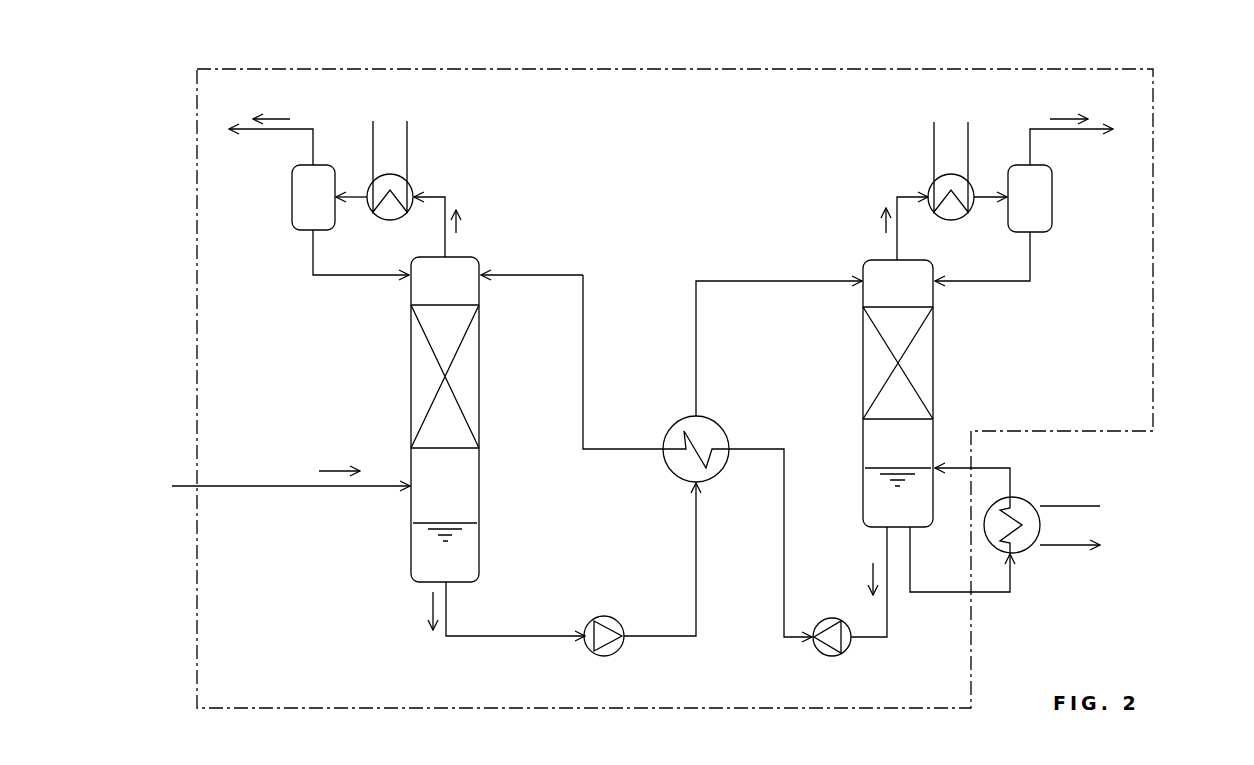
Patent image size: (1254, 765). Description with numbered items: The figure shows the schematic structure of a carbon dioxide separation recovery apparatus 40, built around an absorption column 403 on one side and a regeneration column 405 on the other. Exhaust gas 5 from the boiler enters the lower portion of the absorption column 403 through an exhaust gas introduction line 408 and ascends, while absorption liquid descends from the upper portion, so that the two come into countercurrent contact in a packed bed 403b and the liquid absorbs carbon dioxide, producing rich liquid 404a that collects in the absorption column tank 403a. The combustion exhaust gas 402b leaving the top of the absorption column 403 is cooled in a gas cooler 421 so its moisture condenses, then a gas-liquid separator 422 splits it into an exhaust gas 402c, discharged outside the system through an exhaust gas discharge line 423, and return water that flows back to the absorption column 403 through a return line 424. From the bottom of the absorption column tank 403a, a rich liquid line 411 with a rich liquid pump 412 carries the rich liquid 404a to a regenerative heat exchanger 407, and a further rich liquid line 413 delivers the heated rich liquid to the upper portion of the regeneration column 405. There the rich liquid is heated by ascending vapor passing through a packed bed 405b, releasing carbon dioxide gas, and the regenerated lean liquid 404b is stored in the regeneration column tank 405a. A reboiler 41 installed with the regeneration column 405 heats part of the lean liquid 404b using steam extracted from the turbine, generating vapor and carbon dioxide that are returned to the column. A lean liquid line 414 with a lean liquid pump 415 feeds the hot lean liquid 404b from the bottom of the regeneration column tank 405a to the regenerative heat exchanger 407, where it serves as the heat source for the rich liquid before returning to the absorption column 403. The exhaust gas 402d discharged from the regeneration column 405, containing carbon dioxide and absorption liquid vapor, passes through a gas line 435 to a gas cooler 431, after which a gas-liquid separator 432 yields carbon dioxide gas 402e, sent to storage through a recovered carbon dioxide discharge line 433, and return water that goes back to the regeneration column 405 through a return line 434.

The carbon dioxide separation recovery apparatus 40 is at (630, 69).
The exhaust gas 5 is at (337, 470).
The exhaust gas introduction line 408 is at (325, 492).
The absorption column 403 is at (410, 295).
The absorption column tank 403a is at (410, 548).
The packed bed 403b is at (410, 374).
The gas cooler 421 is at (380, 217).
The gas-liquid separator 422 is at (291, 200).
The exhaust gas discharge line 423 is at (272, 133).
The return line 424 is at (311, 256).
The combustion exhaust gas 402b is at (462, 228).
The exhaust gas 402c is at (275, 118).
The rich liquid line 411 is at (468, 638).
The rich liquid pump 412 is at (618, 648).
The rich liquid 404a is at (428, 613).
The regenerative heat exchanger 407 is at (672, 424).
The rich liquid line 413 is at (770, 280).
The regeneration column 405 is at (937, 300).
The regeneration column tank 405a is at (862, 490).
The packed bed 405b is at (936, 366).
The gas cooler 431 is at (930, 188).
The gas-liquid separator 432 is at (1053, 200).
The recovered carbon dioxide discharge line 433 is at (1060, 132).
The return line 434 is at (1030, 270).
The gas line 435 is at (904, 200).
The exhaust gas 402d is at (883, 228).
The carbon dioxide gas 402e is at (1060, 118).
The lean liquid line 414 is at (888, 630).
The lean liquid pump 415 is at (823, 656).
The lean liquid 404b is at (868, 582).
The reboiler 41 is at (1020, 498).